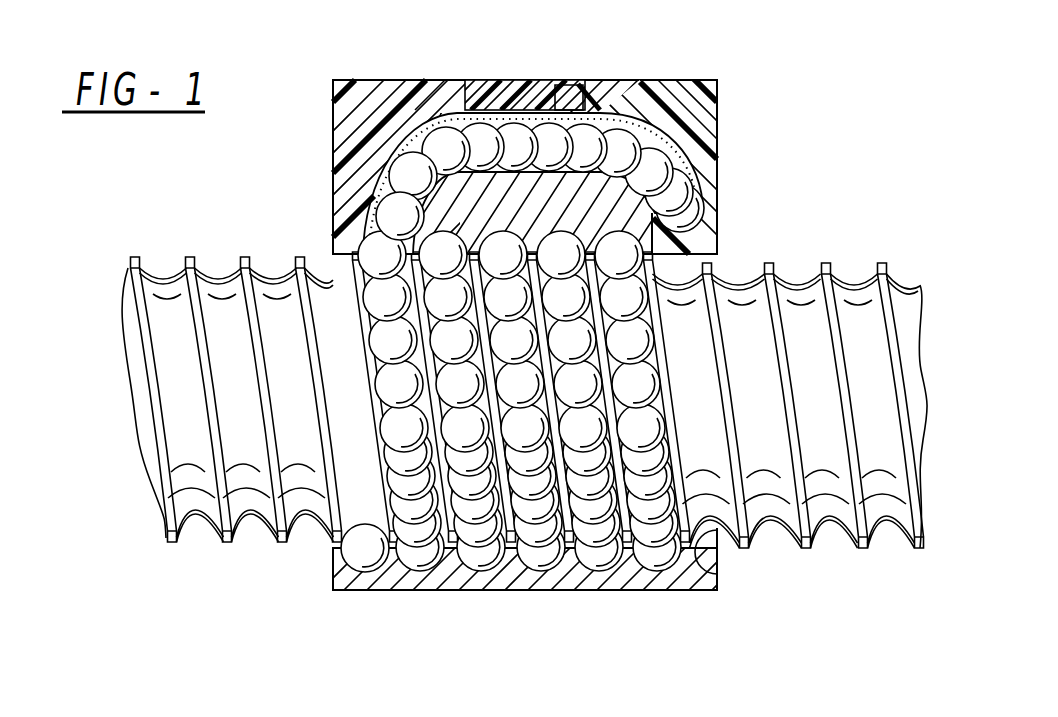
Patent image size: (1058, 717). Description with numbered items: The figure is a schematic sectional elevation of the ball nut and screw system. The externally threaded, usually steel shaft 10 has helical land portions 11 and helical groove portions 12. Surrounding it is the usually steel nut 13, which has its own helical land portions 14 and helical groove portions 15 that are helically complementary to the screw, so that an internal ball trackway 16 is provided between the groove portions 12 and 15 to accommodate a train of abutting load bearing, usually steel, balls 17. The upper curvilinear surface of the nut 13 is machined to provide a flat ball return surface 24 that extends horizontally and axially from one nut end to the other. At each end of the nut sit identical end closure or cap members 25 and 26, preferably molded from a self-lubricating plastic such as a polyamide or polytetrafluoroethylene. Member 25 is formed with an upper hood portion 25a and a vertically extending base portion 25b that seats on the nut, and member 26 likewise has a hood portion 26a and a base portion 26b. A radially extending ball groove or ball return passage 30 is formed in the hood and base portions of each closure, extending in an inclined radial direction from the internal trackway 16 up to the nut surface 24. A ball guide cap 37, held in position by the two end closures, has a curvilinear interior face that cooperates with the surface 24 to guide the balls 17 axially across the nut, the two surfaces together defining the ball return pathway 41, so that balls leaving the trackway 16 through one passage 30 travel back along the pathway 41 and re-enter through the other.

The shaft 10 is at (180, 548).
The helical land portions 11 is at (190, 262).
The helical groove portions 12 is at (204, 268).
The nut 13 is at (620, 590).
The helical land portions 14 is at (405, 590).
The helical groove portions 15 is at (450, 590).
The internal ball trackway 16 is at (506, 570).
The balls 17 is at (717, 128).
The ball return surface 24 is at (600, 110).
The end closure member 25 is at (333, 107).
The upper hood portion 25a is at (445, 80).
The base portion 25b is at (333, 213).
The end closure member 26 is at (718, 162).
The hood portion 26a is at (662, 98).
The base portion 26b is at (715, 230).
The ball return passage 30 is at (390, 118).
The ball guide cap 37 is at (505, 80).
The ball return pathway 41 is at (553, 108).